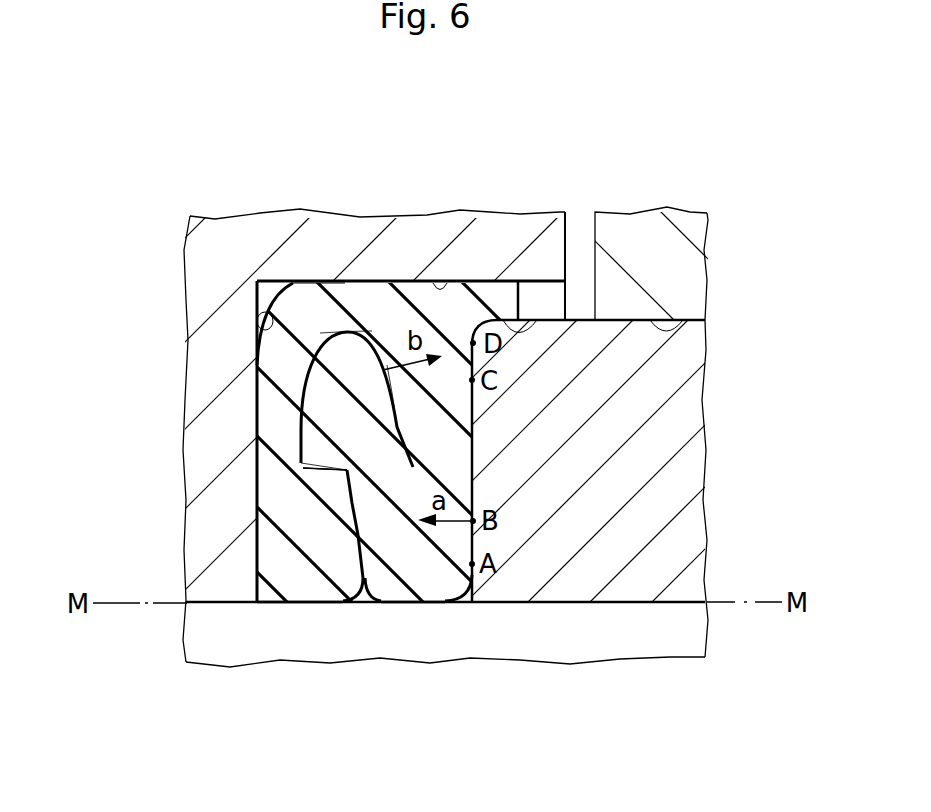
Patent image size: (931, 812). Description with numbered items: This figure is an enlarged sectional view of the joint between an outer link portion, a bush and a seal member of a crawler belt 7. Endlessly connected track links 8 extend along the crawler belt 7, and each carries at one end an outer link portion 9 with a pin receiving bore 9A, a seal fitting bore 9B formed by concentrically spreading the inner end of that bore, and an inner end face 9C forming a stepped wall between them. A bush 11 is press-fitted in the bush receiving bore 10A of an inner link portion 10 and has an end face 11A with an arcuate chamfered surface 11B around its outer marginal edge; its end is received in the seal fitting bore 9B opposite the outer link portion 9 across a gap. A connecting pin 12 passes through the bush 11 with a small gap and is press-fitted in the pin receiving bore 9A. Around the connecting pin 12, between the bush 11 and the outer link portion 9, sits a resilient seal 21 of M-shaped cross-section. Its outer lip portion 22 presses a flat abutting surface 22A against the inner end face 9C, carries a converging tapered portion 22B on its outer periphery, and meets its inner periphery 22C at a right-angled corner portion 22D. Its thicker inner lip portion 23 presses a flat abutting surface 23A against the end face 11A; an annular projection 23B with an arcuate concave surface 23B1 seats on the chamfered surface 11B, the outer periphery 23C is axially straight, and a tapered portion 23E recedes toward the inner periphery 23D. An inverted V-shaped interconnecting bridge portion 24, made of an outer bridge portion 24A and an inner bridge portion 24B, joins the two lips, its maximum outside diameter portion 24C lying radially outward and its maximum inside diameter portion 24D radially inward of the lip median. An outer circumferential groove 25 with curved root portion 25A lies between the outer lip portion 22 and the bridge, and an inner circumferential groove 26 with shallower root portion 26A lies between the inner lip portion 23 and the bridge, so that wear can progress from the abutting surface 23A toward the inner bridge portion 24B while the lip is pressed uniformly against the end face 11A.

The crawler belt 7 is at (181, 203).
The track link 8 is at (172, 289).
The outer link portion 9 is at (223, 232).
The pin receiving bore 9A is at (216, 604).
The seal fitting bore 9B is at (439, 281).
The inner end face 9C is at (262, 328).
The inner link portion 10 is at (638, 230).
The bush receiving bore 10A is at (655, 333).
The bush 11 is at (667, 570).
The end face 11A is at (476, 492).
The chamfered surface 11B is at (474, 274).
The connecting pin 12 is at (617, 630).
The seal 21 is at (290, 270).
The outer lip portion 22 is at (298, 300).
The abutting surface 22A is at (300, 553).
The tapered portion 22B is at (300, 275).
The inner periphery 22C is at (307, 604).
The corner portion 22D is at (275, 582).
The inner lip portion 23 is at (386, 305).
The abutting surface 23A is at (470, 488).
The annular projection 23B is at (503, 293).
The concave surface 23B1 is at (545, 318).
The outer periphery 23C is at (412, 296).
The inner periphery 23D is at (410, 604).
The tapered portion 23E is at (470, 604).
The interconnecting bridge portion 24 is at (337, 400).
The outer bridge portion 24A is at (337, 483).
The inner bridge portion 24B is at (382, 472).
The maximum outside diameter portion 24C is at (346, 330).
The maximum inside diameter portion 24D is at (345, 468).
The outer circumferential groove 25 is at (300, 350).
The root portion 25A is at (330, 472).
The inner circumferential groove 26 is at (464, 398).
The root portion 26A is at (400, 440).